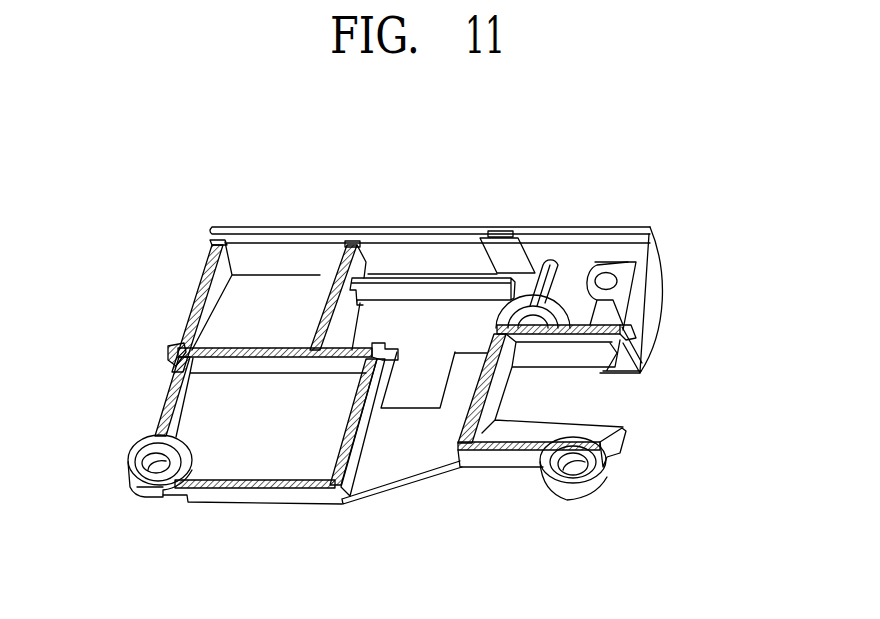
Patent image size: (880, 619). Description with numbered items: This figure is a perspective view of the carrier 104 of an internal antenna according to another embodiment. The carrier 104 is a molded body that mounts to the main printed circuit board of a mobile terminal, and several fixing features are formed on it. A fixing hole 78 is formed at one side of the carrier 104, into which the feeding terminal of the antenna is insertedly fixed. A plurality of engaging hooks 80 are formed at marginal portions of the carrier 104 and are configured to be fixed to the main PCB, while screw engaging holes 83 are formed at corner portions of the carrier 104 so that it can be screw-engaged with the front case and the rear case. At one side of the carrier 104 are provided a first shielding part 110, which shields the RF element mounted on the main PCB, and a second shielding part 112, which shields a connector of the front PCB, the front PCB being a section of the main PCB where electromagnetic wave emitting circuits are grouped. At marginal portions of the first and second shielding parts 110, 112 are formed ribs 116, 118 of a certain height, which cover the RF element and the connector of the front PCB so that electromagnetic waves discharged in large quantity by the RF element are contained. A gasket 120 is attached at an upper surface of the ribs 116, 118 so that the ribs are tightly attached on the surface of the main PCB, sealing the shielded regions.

The carrier 104 is at (606, 223).
The second shielding part 112 is at (263, 293).
The rib 118 is at (340, 320).
The fixing hole 78 is at (612, 281).
The engaging hook 80 is at (175, 346).
The first shielding part 110 is at (266, 448).
The gasket 120 is at (170, 383).
The rib 116 is at (355, 502).
The screw engaging hole 83 is at (145, 497).